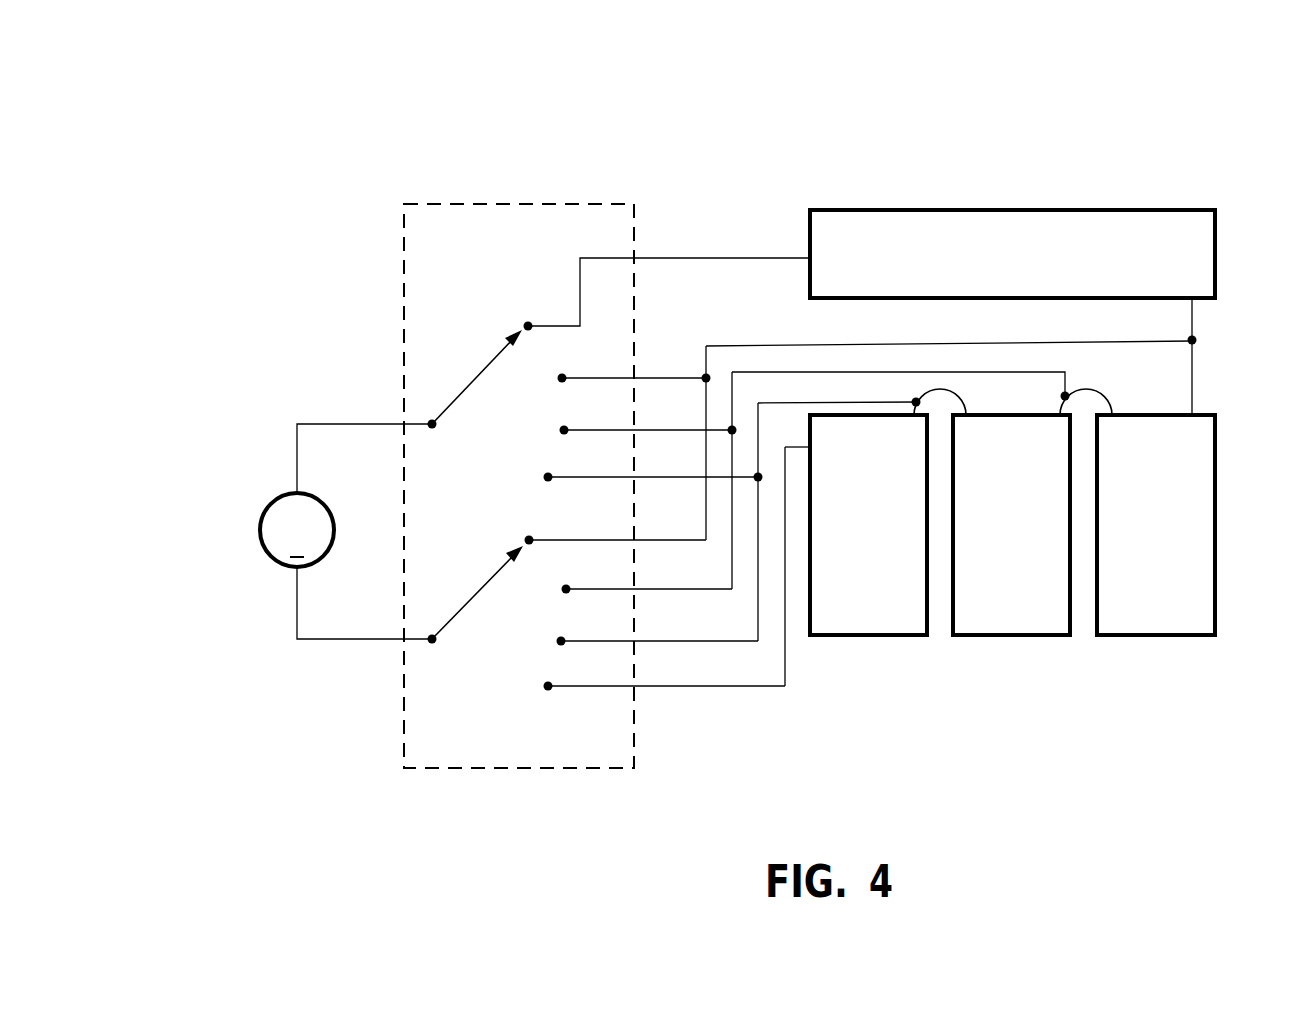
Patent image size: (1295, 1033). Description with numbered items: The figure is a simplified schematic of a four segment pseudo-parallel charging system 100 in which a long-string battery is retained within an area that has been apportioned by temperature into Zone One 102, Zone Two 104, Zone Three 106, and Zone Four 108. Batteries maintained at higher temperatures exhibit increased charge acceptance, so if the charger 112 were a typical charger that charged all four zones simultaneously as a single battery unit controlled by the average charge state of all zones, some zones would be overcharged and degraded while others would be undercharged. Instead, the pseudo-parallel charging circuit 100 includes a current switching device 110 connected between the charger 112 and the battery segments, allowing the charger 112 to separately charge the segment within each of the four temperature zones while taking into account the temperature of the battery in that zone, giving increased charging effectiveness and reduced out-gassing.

The pseudo-parallel charging system 100 is at (310, 134).
The Zone One 102 is at (1035, 208).
The Zone Two 104 is at (1165, 638).
The Zone Three 106 is at (1033, 638).
The Zone Four 108 is at (873, 638).
The current switching device 110 is at (555, 200).
The charger 112 is at (262, 527).